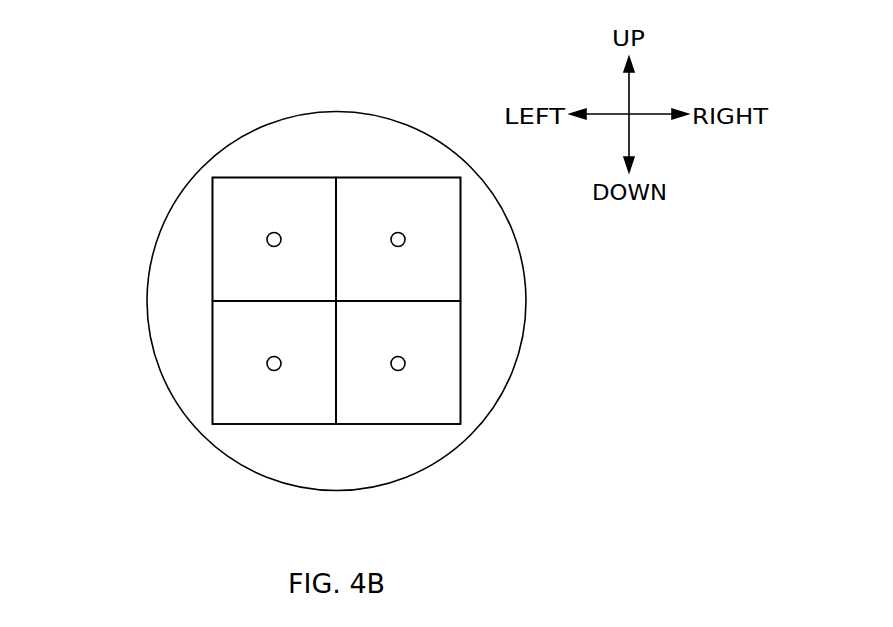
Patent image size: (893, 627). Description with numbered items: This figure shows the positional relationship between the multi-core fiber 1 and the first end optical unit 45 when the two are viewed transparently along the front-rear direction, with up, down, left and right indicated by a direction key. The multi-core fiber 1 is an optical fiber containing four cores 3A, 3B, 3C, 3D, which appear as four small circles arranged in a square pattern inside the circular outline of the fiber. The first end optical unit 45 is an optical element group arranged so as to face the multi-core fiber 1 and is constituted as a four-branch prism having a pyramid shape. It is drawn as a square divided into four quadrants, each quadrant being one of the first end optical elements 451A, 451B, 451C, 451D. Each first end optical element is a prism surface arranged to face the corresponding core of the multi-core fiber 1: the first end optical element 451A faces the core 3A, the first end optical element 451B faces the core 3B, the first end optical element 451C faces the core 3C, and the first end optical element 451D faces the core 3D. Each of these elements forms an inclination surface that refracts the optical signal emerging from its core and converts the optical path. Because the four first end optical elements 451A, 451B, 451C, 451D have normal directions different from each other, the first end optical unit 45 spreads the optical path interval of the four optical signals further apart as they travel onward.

The multi-core fiber 1 is at (194, 107).
The core 3A is at (274, 232).
The core 3B is at (398, 232).
The core 3C is at (398, 370).
The core 3D is at (274, 370).
The first end optical unit 45 is at (472, 295).
The first end optical element 451A is at (213, 238).
The first end optical element 451B is at (460, 240).
The first end optical element 451C is at (460, 362).
The first end optical element 451D is at (213, 362).